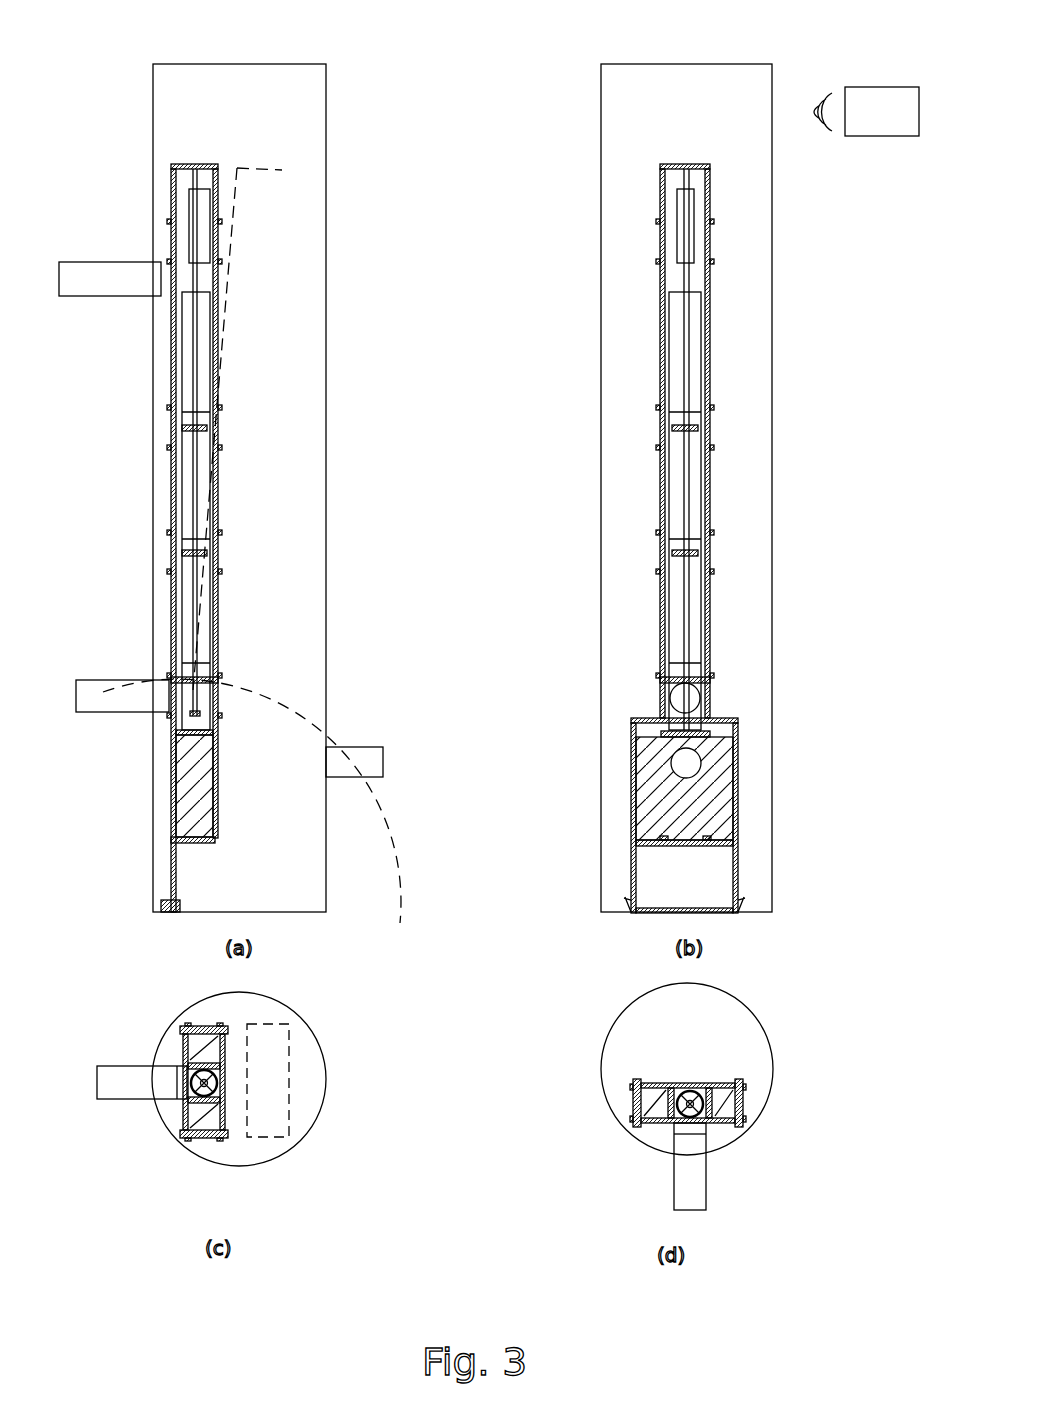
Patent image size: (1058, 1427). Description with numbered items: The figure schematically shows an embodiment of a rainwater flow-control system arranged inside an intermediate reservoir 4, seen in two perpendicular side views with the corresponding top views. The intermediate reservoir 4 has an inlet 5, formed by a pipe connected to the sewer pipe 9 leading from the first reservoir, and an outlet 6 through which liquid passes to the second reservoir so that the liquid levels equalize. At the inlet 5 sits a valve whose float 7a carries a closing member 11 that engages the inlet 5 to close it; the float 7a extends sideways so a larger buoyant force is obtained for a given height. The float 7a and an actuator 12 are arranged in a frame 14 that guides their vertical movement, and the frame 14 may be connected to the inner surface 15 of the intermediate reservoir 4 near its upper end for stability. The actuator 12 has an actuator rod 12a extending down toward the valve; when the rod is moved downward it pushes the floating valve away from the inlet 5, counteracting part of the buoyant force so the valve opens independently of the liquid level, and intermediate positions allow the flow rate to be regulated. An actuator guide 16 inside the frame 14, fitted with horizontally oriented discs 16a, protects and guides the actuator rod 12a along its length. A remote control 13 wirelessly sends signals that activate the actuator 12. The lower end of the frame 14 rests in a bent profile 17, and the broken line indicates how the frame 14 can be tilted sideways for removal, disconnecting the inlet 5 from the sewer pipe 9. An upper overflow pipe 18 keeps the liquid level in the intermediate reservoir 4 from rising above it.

The intermediate reservoir 4 is at (153, 104).
The inner surface 15 is at (312, 124).
The frame 14 is at (172, 177).
The upper overflow pipe 18 is at (110, 262).
The actuator 12 is at (203, 236).
The actuator rod 12a is at (197, 278).
The actuator guide 16 is at (187, 367).
The horizontally oriented discs 16a is at (187, 429).
The sewer pipe 9 is at (85, 690).
The inlet 5 is at (196, 717).
The closing member 11 is at (190, 737).
The float 7a is at (190, 791).
The bent profile 17 is at (165, 910).
The outlet 6 is at (368, 752).
The remote control 13 is at (881, 87).